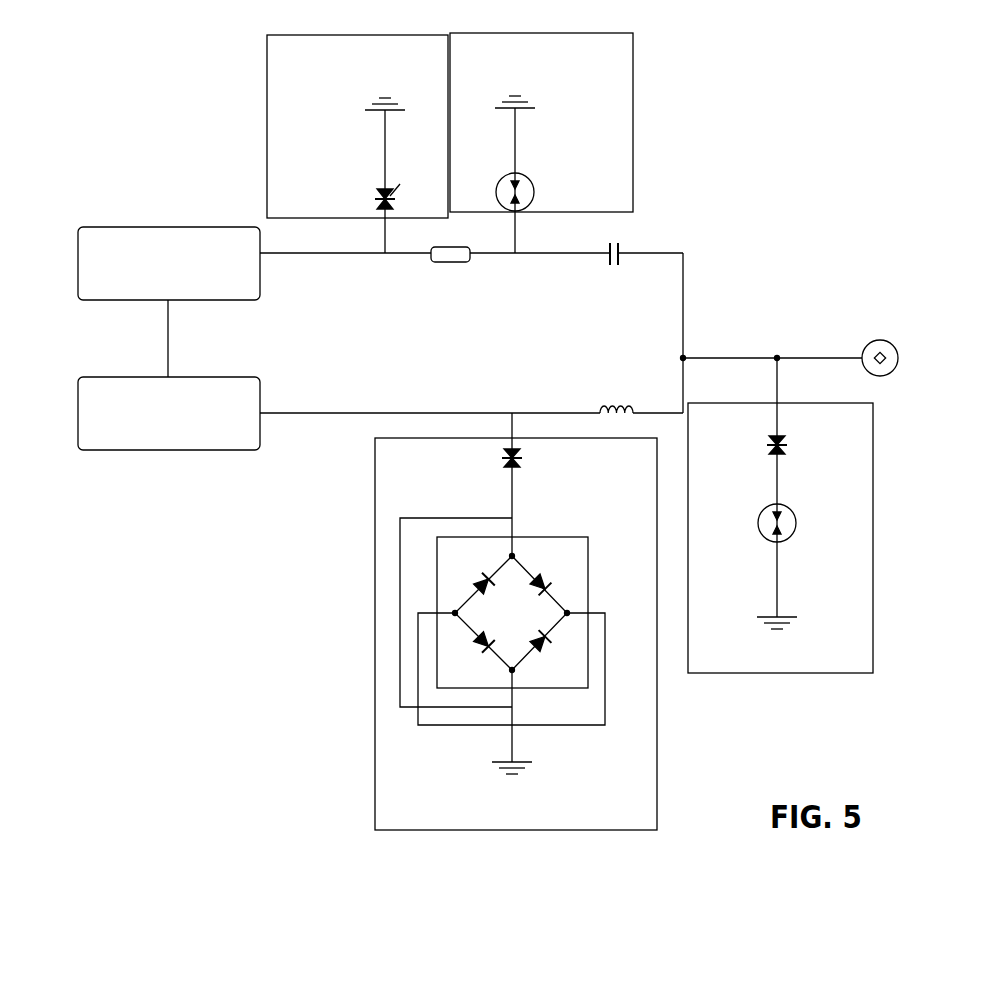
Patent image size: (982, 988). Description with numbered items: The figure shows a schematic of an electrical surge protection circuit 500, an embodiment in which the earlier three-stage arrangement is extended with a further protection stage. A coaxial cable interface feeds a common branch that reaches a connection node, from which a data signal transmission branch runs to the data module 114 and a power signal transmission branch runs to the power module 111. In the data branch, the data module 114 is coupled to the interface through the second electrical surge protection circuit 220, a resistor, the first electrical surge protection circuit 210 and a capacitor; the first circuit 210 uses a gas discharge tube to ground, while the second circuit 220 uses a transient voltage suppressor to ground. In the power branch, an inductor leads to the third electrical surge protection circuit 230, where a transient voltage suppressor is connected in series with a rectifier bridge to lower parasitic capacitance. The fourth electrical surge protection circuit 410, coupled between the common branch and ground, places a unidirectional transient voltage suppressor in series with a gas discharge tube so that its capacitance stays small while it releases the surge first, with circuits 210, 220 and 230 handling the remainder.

The electrical surge protection circuit 500 is at (910, 53).
The data module 114 is at (169, 262).
The power module 111 is at (169, 413).
The second electrical surge protection circuit 220 is at (265, 120).
The first electrical surge protection circuit 210 is at (633, 110).
The third electrical surge protection circuit 230 is at (375, 680).
The fourth electrical surge protection circuit 410 is at (873, 605).